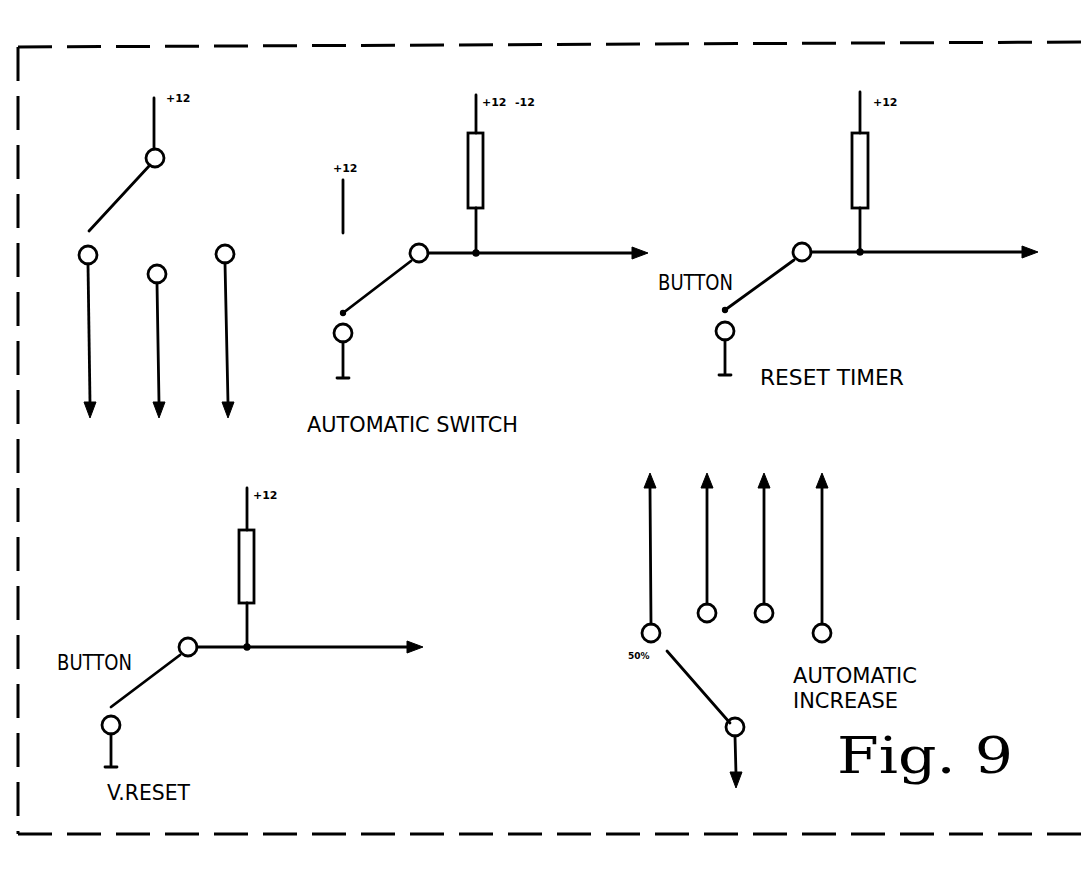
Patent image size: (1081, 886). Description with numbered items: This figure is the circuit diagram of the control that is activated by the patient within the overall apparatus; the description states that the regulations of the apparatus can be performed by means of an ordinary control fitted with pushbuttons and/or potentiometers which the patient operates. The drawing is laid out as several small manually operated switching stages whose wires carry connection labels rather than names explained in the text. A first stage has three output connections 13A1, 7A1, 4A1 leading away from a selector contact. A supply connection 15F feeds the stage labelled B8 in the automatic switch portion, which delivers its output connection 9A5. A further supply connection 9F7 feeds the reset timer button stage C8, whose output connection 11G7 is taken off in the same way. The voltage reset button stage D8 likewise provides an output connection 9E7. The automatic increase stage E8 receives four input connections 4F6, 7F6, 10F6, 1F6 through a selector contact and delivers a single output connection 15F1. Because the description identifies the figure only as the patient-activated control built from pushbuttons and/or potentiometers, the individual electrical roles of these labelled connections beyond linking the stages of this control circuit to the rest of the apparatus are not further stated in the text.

The output line 13A1 is at (90, 332).
The output line 7A1 is at (159, 341).
The output line 4A1 is at (228, 331).
The node 15F pull-up resistor 15F is at (496, 175).
The automatic switch output 9A5 is at (538, 246).
The automatic switch B8 is at (401, 311).
The reset timer pull-up resistor 9F7 is at (907, 173).
The reset timer output 11G7 is at (924, 242).
The reset timer button C8 is at (791, 309).
The V.RESET button D8 is at (199, 627).
The V.RESET output 9E7 is at (310, 639).
The automatic increase input 4F6 is at (652, 557).
The automatic increase input 7F6 is at (708, 547).
The automatic increase input 10F6 is at (765, 547).
The automatic increase input 1F6 is at (824, 557).
The automatic increase selector switch E8 is at (712, 697).
The automatic increase output 15F1 is at (730, 762).